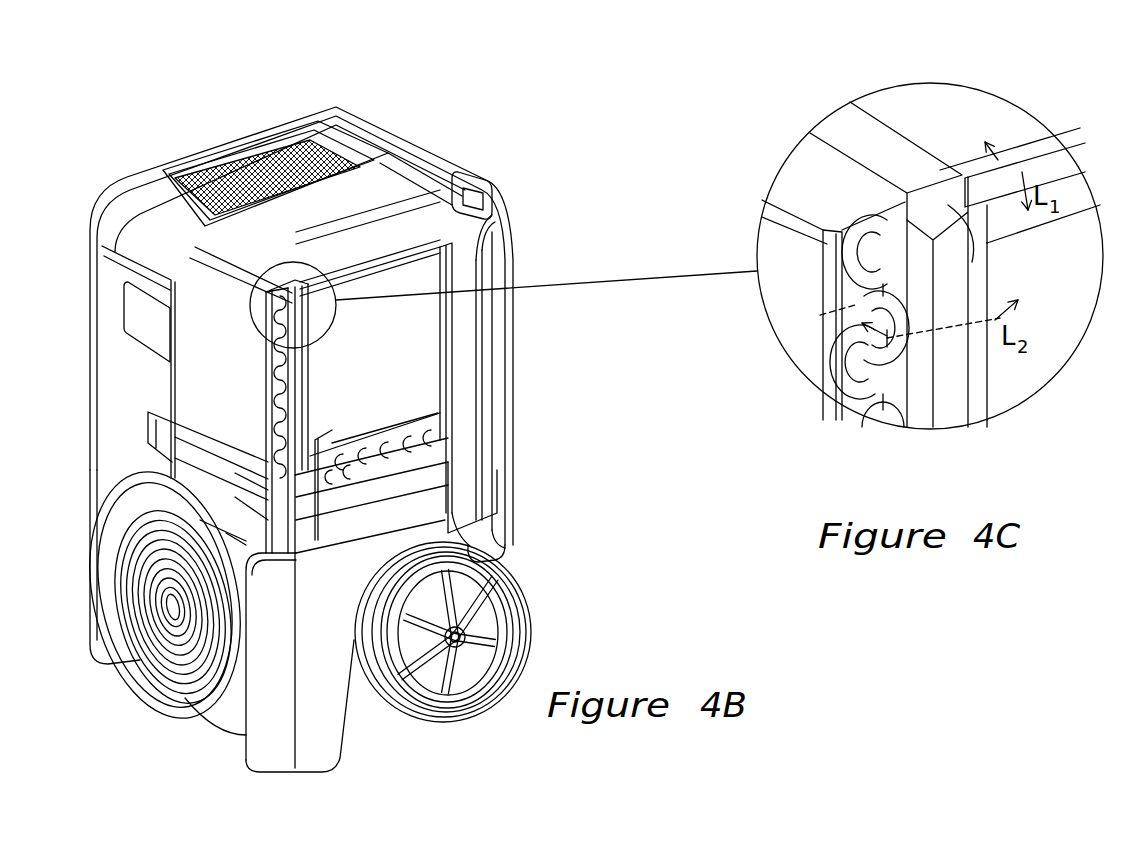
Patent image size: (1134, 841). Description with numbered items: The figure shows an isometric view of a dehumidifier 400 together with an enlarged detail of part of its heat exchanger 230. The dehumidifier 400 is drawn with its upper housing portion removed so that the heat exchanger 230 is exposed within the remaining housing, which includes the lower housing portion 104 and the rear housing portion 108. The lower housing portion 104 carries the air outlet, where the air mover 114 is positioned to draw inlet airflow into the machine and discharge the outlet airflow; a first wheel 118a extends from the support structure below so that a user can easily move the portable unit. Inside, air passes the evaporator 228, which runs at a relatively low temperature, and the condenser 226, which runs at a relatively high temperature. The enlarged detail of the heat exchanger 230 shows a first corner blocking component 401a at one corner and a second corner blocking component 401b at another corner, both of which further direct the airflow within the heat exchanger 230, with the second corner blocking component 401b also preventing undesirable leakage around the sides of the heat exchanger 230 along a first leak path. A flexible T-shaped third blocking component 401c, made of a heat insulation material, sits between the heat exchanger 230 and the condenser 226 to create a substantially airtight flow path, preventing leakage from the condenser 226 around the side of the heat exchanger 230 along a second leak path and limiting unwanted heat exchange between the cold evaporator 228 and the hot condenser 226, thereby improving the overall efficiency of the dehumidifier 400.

In FIG. 4B, the dehumidifier 400 is at (613, 555).
In FIG. 4B, the heat exchanger 230 is at (398, 243).
In FIG. 4C, the heat exchanger 230 is at (1022, 378).
In FIG. 4B, the condenser 226 is at (850, 310).
In FIG. 4C, the condenser 226 is at (835, 313).
In FIG. 4B, the rear housing portion 108 is at (497, 333).
In FIG. 4B, the evaporator 228 is at (430, 417).
In FIG. 4B, the air mover 114 is at (160, 687).
In FIG. 4B, the first wheel 118a is at (468, 687).
In FIG. 4B, the lower housing portion 104 is at (322, 730).
In FIG. 4C, the first corner blocking component 401a is at (840, 130).
In FIG. 4C, the second corner blocking component 401b is at (1042, 145).
In FIG. 4C, the third blocking component 401c is at (963, 420).